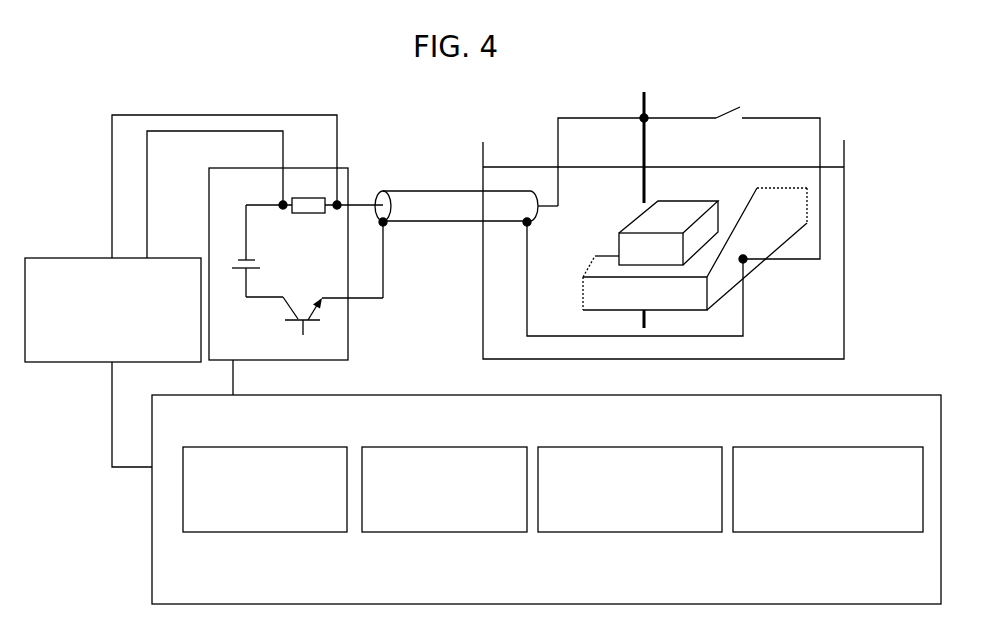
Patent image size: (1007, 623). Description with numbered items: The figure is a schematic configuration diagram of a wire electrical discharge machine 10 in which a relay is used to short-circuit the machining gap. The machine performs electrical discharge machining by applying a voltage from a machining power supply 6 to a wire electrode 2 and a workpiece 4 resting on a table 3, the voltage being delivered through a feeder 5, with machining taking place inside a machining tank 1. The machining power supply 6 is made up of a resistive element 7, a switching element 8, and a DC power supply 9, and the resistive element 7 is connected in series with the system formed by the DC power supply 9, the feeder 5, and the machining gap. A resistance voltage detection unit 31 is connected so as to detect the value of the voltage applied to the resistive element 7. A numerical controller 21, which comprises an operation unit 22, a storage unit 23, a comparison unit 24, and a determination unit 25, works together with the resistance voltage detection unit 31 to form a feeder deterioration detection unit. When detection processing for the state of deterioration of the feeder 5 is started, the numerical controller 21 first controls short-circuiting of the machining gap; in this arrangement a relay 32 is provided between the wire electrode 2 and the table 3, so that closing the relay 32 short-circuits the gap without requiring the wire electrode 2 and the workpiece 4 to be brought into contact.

The machining tank 1 is at (845, 243).
The wire electrode 2 is at (646, 152).
The table 3 is at (695, 249).
The workpiece 4 is at (668, 233).
The feeder 5 is at (559, 227).
The machining power supply 6 is at (240, 168).
The resistive element 7 is at (308, 193).
The switching element 8 is at (330, 322).
The DC power supply 9 is at (257, 251).
The wire electrical discharge machine 10 is at (77, 114).
The numerical controller 21 is at (882, 395).
The operation unit 22 is at (227, 445).
The storage unit 23 is at (415, 443).
The comparison unit 24 is at (628, 443).
The determination unit 25 is at (848, 445).
The resistance voltage detection unit 31 is at (80, 257).
The relay 32 is at (746, 101).